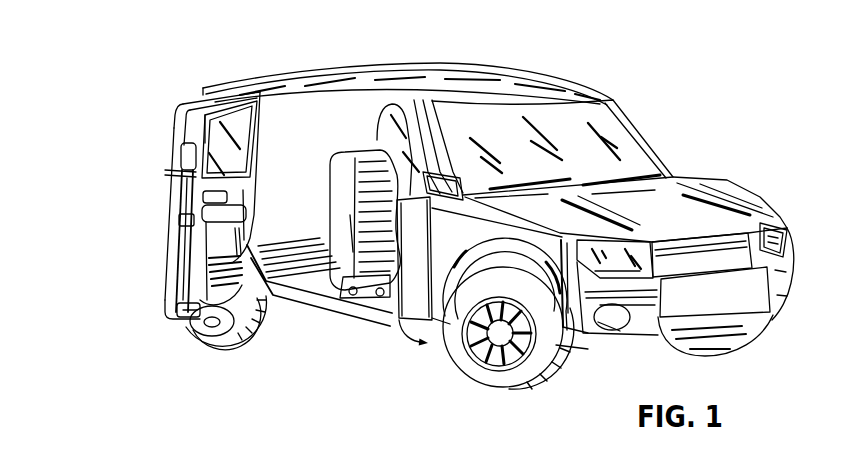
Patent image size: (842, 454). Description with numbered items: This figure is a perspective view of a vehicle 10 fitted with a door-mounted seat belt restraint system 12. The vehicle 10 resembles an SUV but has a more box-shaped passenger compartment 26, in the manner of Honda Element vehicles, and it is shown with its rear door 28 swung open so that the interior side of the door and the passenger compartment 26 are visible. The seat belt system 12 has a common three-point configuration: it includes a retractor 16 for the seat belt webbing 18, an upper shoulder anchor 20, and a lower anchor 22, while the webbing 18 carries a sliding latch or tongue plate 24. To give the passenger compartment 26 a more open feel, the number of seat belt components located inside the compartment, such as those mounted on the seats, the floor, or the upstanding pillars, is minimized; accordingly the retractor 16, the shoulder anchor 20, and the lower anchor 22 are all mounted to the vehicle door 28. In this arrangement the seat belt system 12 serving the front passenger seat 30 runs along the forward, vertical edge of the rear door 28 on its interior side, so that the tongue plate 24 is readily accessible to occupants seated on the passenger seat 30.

The vehicle 10 is at (738, 78).
The door-mounted seat belt restraint system 12 is at (145, 252).
The retractor 16 is at (118, 283).
The seat belt webbing 18 is at (181, 202).
The upper shoulder anchor 20 is at (170, 172).
The lower anchor 22 is at (184, 333).
The tongue plate 24 is at (186, 220).
The passenger compartment 26 is at (292, 148).
The vehicle door 28 is at (158, 104).
The front passenger seat 30 is at (345, 133).